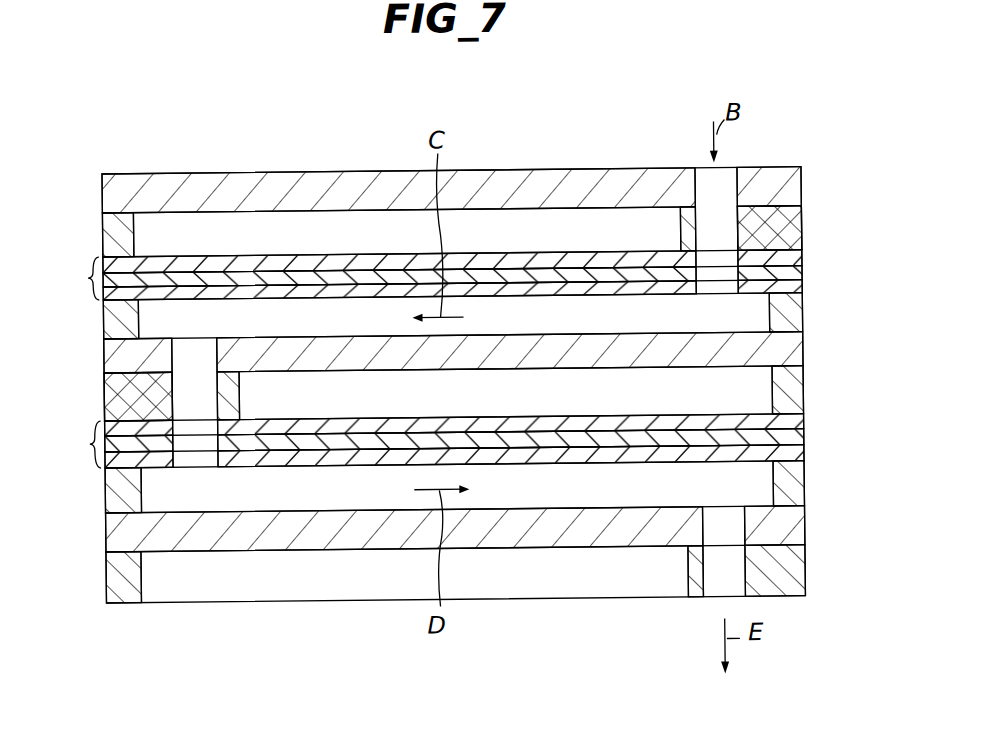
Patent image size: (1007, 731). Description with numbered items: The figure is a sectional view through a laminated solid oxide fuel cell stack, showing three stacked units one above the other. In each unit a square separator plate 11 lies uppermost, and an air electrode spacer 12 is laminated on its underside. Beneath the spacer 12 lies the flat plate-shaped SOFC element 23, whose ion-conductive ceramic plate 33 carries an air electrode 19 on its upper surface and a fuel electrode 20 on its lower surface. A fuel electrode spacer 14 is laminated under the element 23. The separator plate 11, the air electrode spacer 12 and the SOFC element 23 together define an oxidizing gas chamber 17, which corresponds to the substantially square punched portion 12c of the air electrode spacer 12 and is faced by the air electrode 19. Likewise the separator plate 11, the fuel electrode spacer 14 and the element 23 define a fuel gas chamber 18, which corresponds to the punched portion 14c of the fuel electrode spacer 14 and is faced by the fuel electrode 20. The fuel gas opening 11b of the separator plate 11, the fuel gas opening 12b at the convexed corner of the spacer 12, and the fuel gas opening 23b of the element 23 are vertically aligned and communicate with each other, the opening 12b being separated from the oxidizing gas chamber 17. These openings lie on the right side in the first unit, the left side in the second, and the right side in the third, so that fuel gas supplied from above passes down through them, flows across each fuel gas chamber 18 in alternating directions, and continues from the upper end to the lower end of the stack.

The separator plate 11 is at (548, 192).
The fuel gas opening 11b is at (740, 191).
The air electrode spacer 12 is at (788, 231).
The fuel gas opening 12b is at (742, 288).
The punched portion 12c is at (134, 235).
The fuel electrode spacer 14 is at (795, 320).
The punched portion 14c is at (138, 318).
The oxidizing gas chamber 17 is at (355, 248).
The fuel gas chamber 18 is at (551, 336).
The air electrode 19 is at (794, 268).
The fuel electrode 20 is at (805, 290).
The flat plate-shaped SOFC element 23 is at (76, 362).
The fuel gas opening 23b is at (748, 204).
The ion-conductive ceramic plate 33 is at (800, 271).